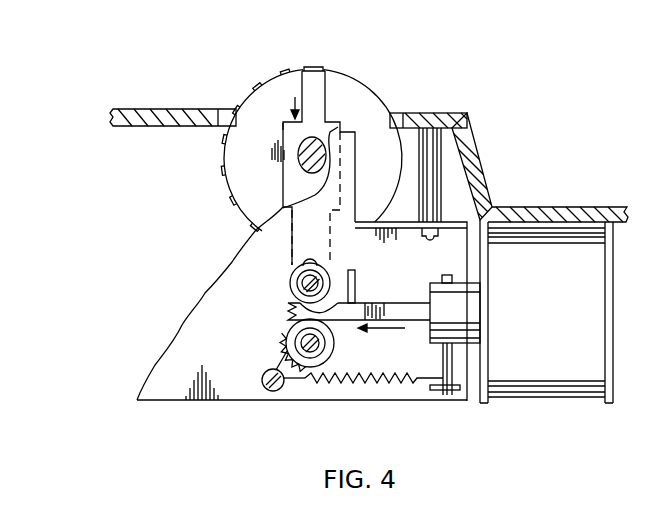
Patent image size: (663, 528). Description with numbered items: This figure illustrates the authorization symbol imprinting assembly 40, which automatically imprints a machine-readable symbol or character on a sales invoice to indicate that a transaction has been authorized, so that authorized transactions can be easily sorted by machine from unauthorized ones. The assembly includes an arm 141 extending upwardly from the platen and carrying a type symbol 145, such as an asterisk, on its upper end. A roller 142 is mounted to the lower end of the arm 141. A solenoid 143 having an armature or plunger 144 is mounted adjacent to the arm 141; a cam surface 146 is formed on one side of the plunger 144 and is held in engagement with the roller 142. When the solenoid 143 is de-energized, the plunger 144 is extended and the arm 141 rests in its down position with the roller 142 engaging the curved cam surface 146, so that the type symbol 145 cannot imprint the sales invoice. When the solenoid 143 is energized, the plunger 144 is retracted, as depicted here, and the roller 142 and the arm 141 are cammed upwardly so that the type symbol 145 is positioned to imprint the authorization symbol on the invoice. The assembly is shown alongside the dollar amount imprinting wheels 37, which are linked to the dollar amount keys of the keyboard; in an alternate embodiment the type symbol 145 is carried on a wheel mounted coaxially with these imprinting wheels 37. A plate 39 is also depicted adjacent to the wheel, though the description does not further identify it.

The imprinting wheels 37 is at (251, 80).
The plate 39 is at (143, 108).
The authorization symbol imprinting assembly 40 is at (265, 203).
The arm 141 is at (316, 92).
The roller 142 is at (289, 282).
The solenoid 143 is at (536, 375).
The plunger 144 is at (385, 305).
The type symbol 145 is at (316, 67).
The cam surface 146 is at (331, 308).